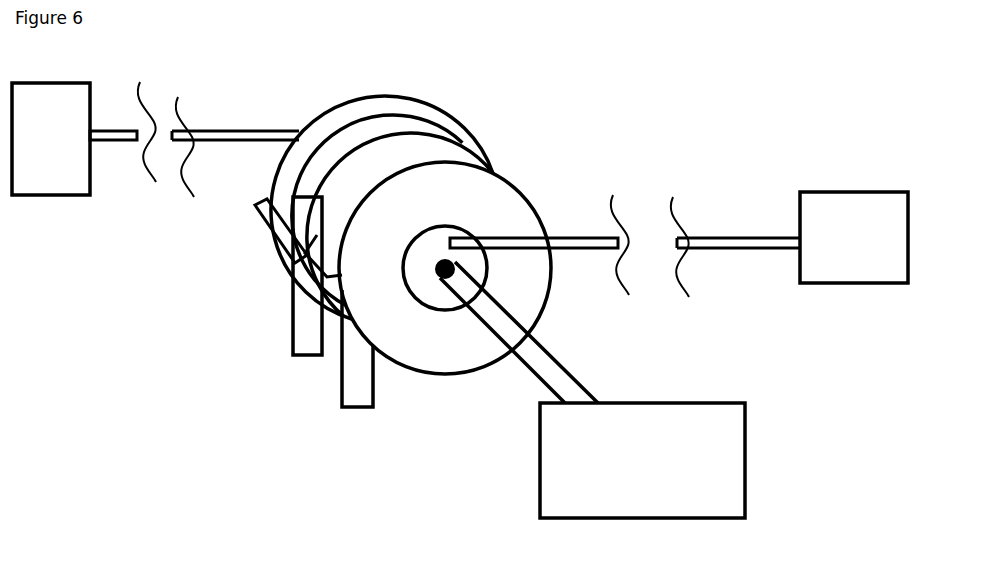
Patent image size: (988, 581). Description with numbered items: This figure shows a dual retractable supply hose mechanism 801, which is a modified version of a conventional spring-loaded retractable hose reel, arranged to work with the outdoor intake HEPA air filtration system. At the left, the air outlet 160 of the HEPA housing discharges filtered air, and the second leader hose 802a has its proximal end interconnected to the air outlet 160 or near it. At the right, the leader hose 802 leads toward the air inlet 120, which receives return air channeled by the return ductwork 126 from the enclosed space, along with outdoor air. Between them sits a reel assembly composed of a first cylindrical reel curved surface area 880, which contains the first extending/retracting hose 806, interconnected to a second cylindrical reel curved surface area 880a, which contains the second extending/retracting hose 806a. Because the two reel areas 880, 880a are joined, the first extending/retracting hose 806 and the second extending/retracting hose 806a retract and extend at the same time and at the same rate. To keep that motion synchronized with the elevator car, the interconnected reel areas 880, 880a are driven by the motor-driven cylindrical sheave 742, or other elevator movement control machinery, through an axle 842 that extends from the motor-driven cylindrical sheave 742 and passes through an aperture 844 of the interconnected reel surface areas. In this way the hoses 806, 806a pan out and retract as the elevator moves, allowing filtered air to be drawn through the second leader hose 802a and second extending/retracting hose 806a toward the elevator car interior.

The air outlet 160 is at (51, 139).
The second leader hose 802a is at (118, 122).
The retractable supply hose mechanism 801 is at (478, 91).
The leader hose 802 is at (718, 221).
The air inlet 120 is at (854, 237).
The return ductwork 126 is at (854, 237).
The second cylindrical reel curved surface area 880a is at (266, 230).
The first cylindrical reel curved surface area 880 is at (300, 272).
The aperture 844 is at (276, 350).
The second extending/retracting hose 806a is at (445, 270).
The first extending/retracting hose 806 is at (326, 399).
The axle 842 is at (524, 362).
The motor-driven cylindrical sheave 742 is at (642, 460).